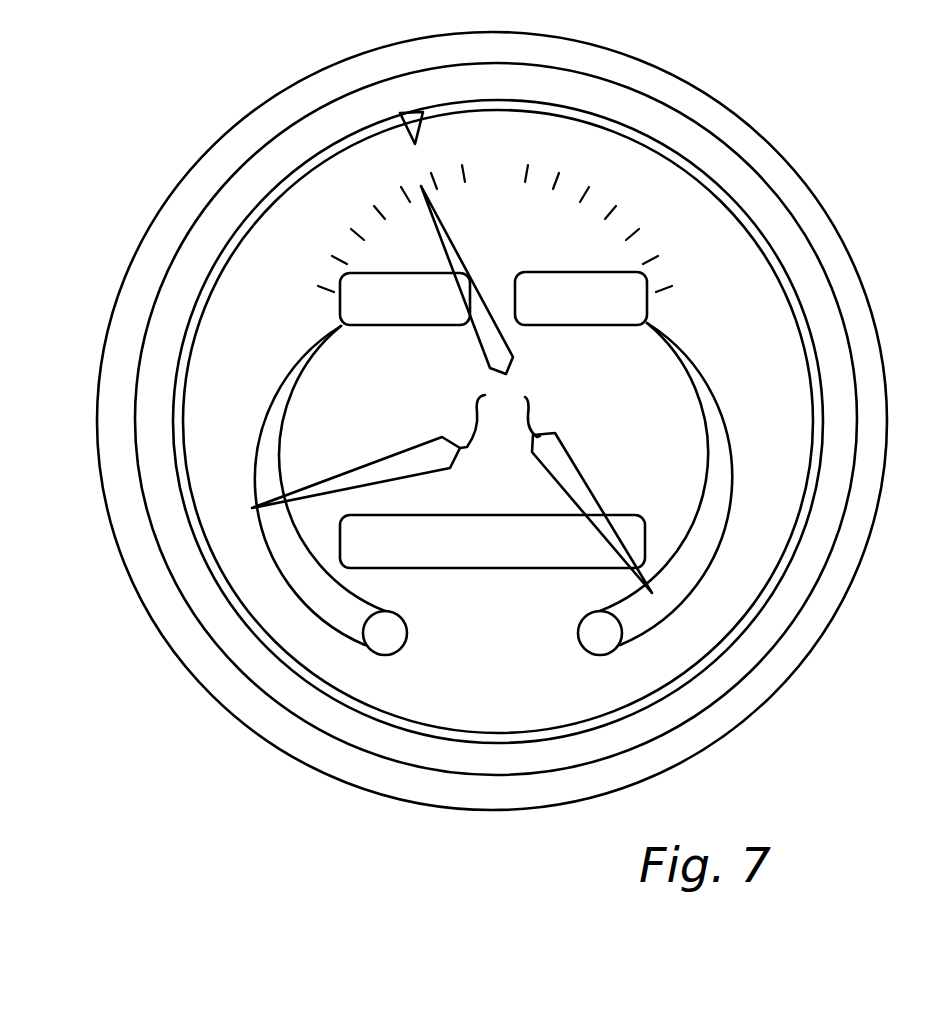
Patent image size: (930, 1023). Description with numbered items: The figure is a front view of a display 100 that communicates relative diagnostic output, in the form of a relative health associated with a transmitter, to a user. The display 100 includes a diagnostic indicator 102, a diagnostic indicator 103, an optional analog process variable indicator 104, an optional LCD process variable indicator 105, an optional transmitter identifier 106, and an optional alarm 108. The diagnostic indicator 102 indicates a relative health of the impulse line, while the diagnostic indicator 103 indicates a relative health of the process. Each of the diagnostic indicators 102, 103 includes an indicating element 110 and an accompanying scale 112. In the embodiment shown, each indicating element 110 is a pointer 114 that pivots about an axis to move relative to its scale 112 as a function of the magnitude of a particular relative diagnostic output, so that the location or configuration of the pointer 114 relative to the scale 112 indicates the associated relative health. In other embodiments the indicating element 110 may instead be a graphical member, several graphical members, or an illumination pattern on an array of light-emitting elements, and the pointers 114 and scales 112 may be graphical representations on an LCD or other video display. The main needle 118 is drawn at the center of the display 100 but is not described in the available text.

The display 100 is at (148, 170).
The diagnostic indicator 102 is at (247, 592).
The diagnostic indicator 103 is at (735, 596).
The analog process variable indicator 104 is at (550, 217).
The LCD process variable indicator 105 is at (368, 282).
The transmitter identifier 106 is at (487, 570).
The alarm 108 is at (593, 627).
The indicating element 110 is at (302, 487).
The scale 112 is at (256, 466).
The pointer 114 is at (430, 472).
The main needle 118 is at (473, 295).